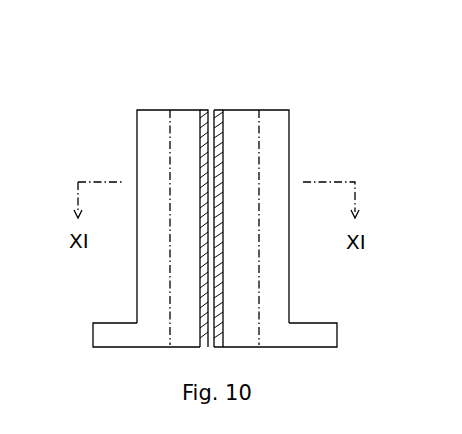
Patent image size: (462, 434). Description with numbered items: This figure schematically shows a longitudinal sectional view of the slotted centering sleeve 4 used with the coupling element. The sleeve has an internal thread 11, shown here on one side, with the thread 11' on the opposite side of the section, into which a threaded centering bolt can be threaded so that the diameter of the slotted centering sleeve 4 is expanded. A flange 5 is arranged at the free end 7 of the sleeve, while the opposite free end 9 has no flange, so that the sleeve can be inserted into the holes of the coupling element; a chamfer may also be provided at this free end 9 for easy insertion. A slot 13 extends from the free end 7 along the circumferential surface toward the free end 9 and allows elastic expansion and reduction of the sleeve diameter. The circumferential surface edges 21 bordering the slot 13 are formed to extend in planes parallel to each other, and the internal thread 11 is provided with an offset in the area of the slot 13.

The slotted centering sleeve 4 is at (298, 88).
The flange 5 is at (320, 341).
The free end 7 is at (355, 341).
The free end 9 is at (322, 123).
The internal thread 11 is at (155, 211).
The layer 11' is at (282, 215).
The slot 13 is at (210, 263).
The circumferential surface edges 21 is at (218, 140).